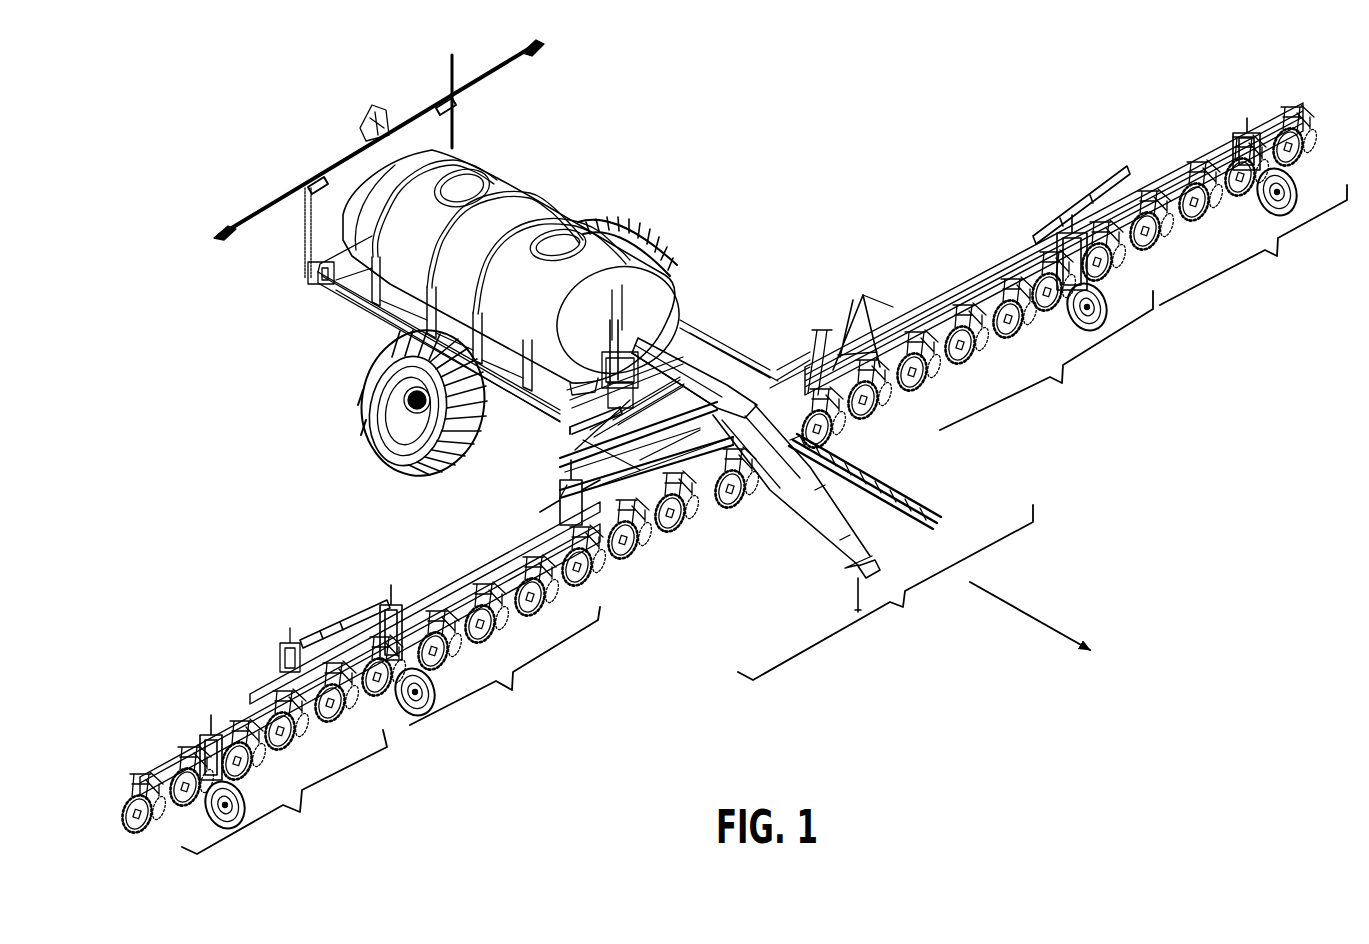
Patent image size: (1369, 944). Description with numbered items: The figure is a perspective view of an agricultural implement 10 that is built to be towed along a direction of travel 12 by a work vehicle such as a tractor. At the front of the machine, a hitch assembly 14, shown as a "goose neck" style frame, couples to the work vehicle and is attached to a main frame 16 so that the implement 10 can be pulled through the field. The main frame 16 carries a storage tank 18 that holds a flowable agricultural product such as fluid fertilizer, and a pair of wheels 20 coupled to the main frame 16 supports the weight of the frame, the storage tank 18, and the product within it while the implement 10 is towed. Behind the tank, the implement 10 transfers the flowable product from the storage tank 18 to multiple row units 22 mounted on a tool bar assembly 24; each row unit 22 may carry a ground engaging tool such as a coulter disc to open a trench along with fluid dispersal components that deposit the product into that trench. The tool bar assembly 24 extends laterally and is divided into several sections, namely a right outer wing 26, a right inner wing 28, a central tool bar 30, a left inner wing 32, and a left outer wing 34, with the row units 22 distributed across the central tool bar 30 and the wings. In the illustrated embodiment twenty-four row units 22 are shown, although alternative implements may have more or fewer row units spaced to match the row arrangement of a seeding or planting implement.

The agricultural implement 10 is at (753, 200).
The direction of travel 12 is at (1018, 610).
The hitch assembly 14 is at (739, 400).
The main frame 16 is at (357, 300).
The storage tank 18 is at (535, 210).
The pair of wheels 20 is at (641, 222).
The row units 22 is at (980, 373).
The tool bar assembly 24 is at (710, 547).
The right outer wing 26 is at (284, 792).
The right inner wing 28 is at (505, 666).
The central tool bar 30 is at (885, 592).
The left inner wing 32 is at (1054, 266).
The left outer wing 34 is at (1253, 211).